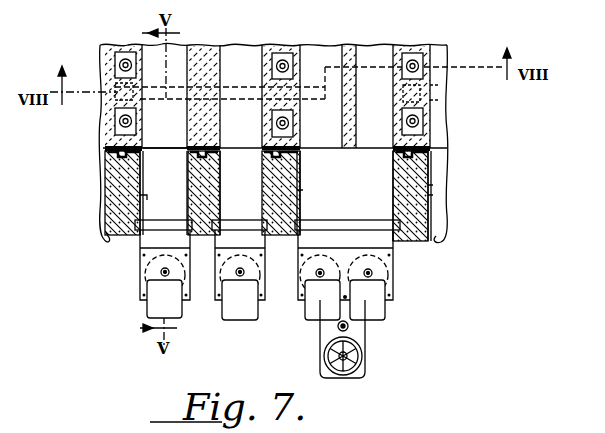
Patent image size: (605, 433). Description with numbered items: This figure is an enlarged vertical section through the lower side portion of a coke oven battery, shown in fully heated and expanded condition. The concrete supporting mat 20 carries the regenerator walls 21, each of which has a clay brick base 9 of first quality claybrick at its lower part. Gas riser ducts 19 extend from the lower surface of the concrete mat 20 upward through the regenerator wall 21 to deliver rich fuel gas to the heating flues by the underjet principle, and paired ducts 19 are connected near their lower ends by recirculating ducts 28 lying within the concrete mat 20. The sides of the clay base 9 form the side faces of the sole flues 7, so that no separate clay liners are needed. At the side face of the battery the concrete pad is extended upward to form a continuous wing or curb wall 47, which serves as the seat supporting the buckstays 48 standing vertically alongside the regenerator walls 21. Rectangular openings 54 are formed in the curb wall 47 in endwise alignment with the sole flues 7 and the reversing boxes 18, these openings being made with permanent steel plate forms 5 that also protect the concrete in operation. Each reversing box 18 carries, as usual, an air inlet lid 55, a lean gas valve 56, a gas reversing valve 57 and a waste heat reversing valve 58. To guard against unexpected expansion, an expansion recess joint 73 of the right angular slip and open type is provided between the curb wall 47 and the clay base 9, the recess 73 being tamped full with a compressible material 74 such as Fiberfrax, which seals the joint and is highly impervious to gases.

The permanent steel plate forms 5 is at (268, 166).
The sole flues 7 is at (286, 96).
The clay brick base 9 is at (262, 108).
The reversing boxes 18 is at (140, 270).
The ducts 19 is at (405, 58).
The concrete supporting mat 20 is at (400, 168).
The regenerator wall 21 is at (288, 54).
The recirculating ducts 28 is at (240, 86).
The wing or curb wall 47 is at (190, 167).
The buckstays 48 is at (141, 198).
The rectangular openings 54 is at (267, 202).
The air inlet lid 55 is at (148, 310).
The lean gas valve 56 is at (361, 358).
The gas reversing valve 57 is at (348, 328).
The waste heat reversing valve 58 is at (372, 274).
The expansion recess joint 73 is at (113, 158).
The compressible material 74 is at (108, 148).